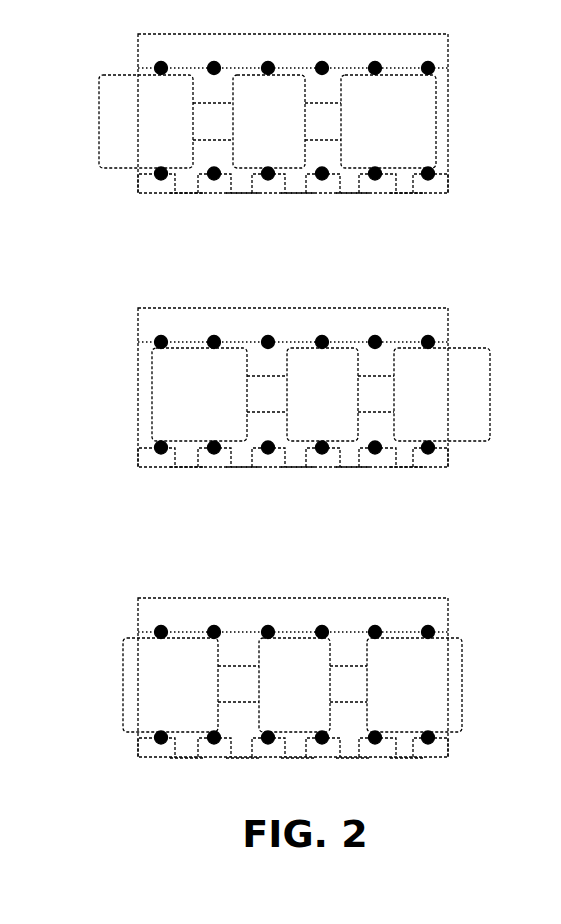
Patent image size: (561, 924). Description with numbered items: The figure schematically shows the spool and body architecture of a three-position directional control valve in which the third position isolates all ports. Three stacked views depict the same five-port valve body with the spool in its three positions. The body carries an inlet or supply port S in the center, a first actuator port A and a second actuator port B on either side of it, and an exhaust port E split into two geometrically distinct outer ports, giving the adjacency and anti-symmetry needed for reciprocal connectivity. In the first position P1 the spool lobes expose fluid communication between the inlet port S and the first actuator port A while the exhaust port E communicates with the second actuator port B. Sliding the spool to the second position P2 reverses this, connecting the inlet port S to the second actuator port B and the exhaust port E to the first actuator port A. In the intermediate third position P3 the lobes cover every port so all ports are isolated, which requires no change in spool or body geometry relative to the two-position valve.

The first position P1 is at (92, 120).
The second position P2 is at (145, 394).
The third position P3 is at (116, 683).
The exhaust port E is at (223, 215).
The first actuator port A is at (276, 488).
The inlet port S is at (333, 215).
The second actuator port B is at (353, 491).